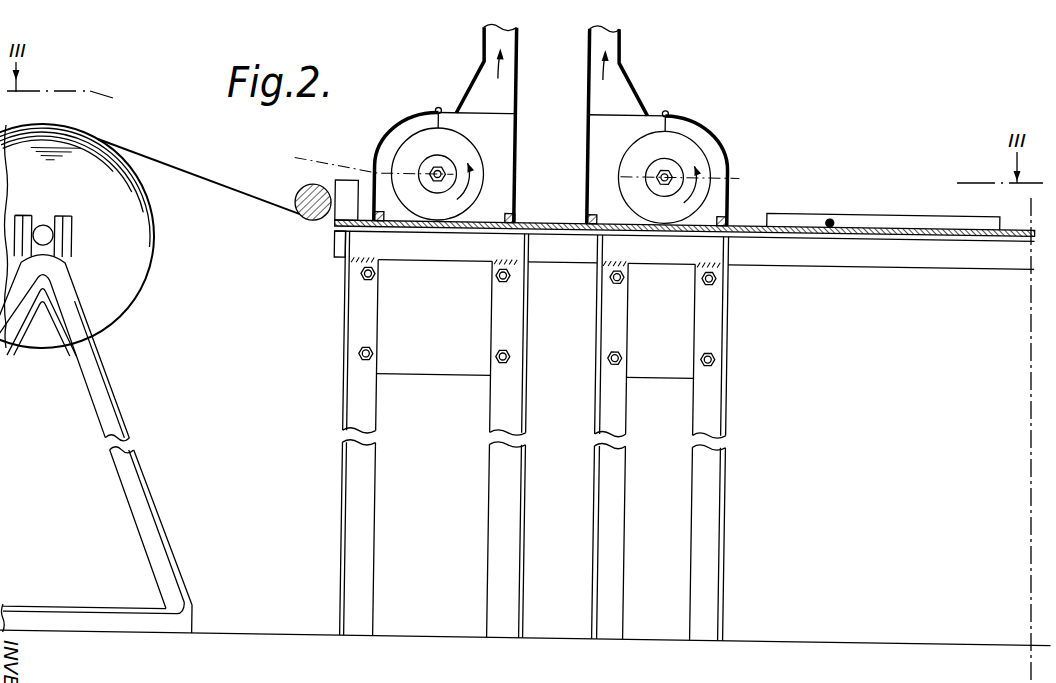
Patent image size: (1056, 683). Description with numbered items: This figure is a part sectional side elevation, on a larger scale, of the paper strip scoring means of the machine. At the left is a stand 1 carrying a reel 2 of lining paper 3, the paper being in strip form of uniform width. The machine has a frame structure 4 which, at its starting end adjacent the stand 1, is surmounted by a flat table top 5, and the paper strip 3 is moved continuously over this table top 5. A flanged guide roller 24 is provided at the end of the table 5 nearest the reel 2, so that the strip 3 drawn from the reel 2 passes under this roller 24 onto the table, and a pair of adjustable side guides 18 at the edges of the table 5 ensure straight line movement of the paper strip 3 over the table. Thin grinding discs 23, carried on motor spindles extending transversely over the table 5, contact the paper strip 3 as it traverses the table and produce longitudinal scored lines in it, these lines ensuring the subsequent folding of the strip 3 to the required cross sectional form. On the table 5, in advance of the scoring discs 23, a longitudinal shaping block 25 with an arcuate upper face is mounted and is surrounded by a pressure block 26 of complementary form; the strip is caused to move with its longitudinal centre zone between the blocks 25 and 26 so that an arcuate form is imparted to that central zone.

The stand 1 is at (121, 426).
The reel 2 is at (141, 270).
The lining paper 3 is at (241, 186).
The frame structure 4 is at (789, 245).
The flat table top 5 is at (570, 227).
The adjustable side guides 18 is at (883, 210).
The grinding discs 23 is at (412, 144).
The flanged guide roller 24 is at (318, 205).
The shaping block 25 is at (586, 184).
The pressure block 26 is at (608, 94).